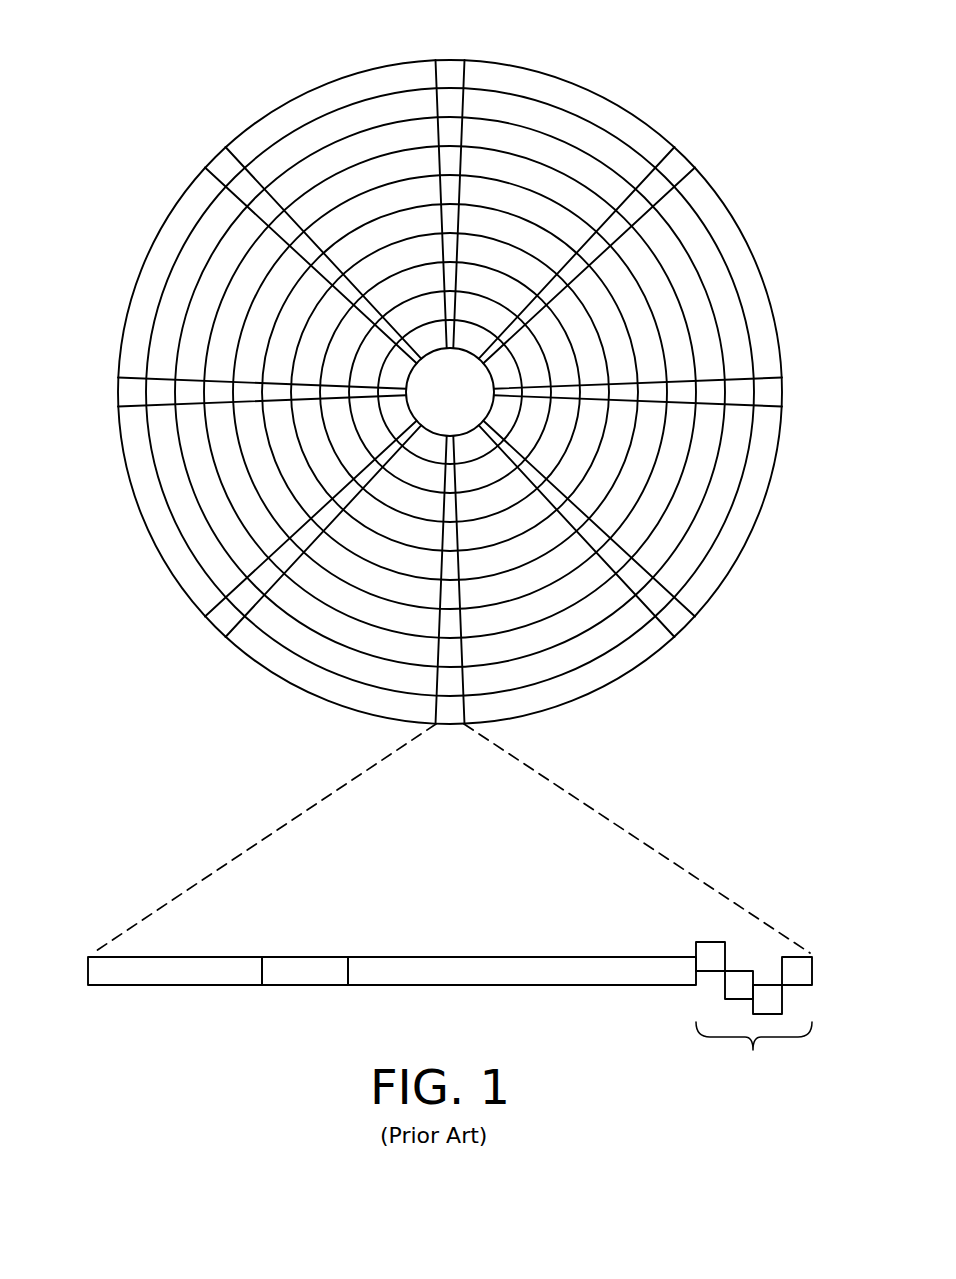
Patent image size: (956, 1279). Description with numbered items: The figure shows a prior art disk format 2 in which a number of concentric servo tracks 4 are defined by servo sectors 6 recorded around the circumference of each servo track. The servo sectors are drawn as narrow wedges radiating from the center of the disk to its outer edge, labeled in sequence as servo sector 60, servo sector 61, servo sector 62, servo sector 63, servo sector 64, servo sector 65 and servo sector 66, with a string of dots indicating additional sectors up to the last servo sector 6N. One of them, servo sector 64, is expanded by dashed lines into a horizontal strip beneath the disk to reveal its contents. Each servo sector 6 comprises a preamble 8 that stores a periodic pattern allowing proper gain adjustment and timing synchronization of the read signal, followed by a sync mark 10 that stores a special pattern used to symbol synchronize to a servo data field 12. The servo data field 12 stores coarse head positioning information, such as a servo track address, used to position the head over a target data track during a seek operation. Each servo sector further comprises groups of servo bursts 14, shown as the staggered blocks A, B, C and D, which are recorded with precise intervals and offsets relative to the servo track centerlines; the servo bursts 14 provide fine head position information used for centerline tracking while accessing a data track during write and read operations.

The disk format 2 is at (205, 65).
The servo tracks 4 is at (565, 123).
The servo sector 6 is at (450, 402).
The servo sector 6_0 60 is at (451, 70).
The servo sector 6_1 61 is at (678, 163).
The servo sector 6_2 62 is at (775, 393).
The servo sector 6_3 63 is at (677, 620).
The servo sector 6_4 64 is at (303, 803).
The servo sector 6_5 65 is at (220, 622).
The servo sector 6_6 66 is at (125, 392).
The servo sector 6_N 6N is at (220, 163).
The preamble 8 is at (153, 985).
The sync mark 10 is at (302, 985).
The servo data field 12 is at (510, 985).
The servo bursts 14 is at (686, 925).